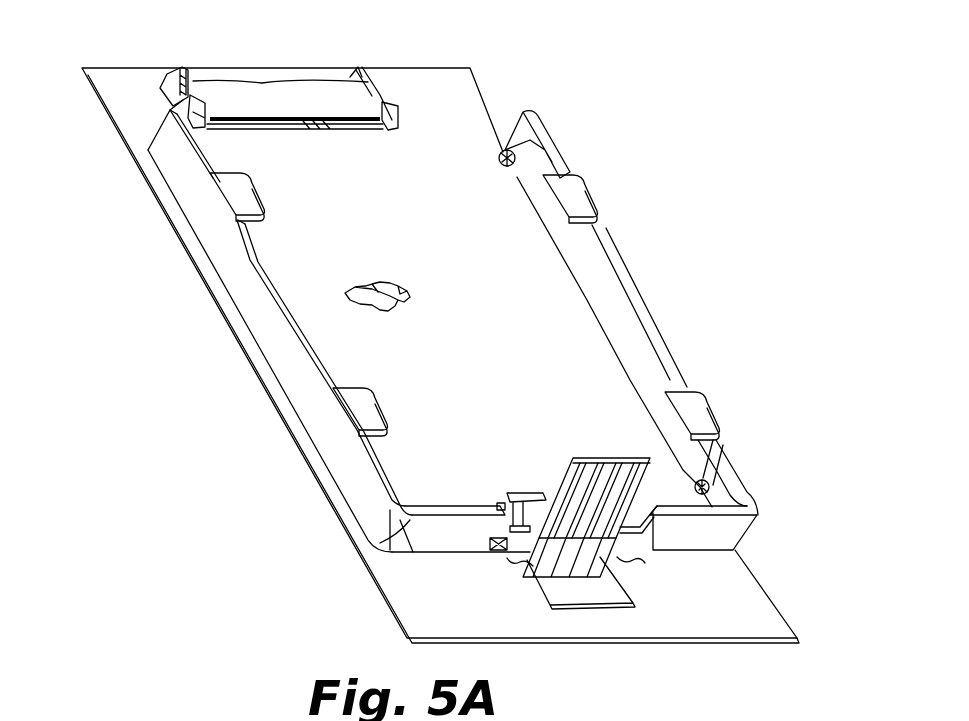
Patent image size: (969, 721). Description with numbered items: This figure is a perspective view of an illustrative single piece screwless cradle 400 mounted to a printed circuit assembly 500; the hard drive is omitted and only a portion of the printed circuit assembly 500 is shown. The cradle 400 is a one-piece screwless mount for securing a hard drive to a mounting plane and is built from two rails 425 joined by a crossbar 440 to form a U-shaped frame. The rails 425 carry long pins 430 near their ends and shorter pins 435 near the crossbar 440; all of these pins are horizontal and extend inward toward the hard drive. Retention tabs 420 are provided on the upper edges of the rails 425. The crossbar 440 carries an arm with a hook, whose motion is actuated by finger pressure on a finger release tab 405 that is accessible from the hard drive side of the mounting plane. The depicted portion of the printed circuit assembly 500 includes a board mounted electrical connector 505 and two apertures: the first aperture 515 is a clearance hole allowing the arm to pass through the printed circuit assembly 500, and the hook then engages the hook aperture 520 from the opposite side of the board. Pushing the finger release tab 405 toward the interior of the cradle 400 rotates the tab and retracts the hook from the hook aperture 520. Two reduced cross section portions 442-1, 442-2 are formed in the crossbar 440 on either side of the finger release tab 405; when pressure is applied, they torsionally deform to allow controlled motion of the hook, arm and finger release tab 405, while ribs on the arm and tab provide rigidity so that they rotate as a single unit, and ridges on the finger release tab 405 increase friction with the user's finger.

The cradle 400 is at (267, 323).
The finger release tab 405 is at (610, 457).
The retention tabs 420 is at (573, 187).
The rails 425 is at (620, 312).
The long pins 430 is at (504, 155).
The shorter pins 435 is at (710, 480).
The crossbar 440 is at (433, 530).
The reduced cross section portion 442-1 is at (633, 561).
The reduced cross section portion 442-2 is at (512, 562).
The printed circuit assembly 500 is at (443, 107).
The board mounted electrical connector 505 is at (260, 88).
The first aperture 515 is at (590, 605).
The hook aperture 520 is at (520, 492).